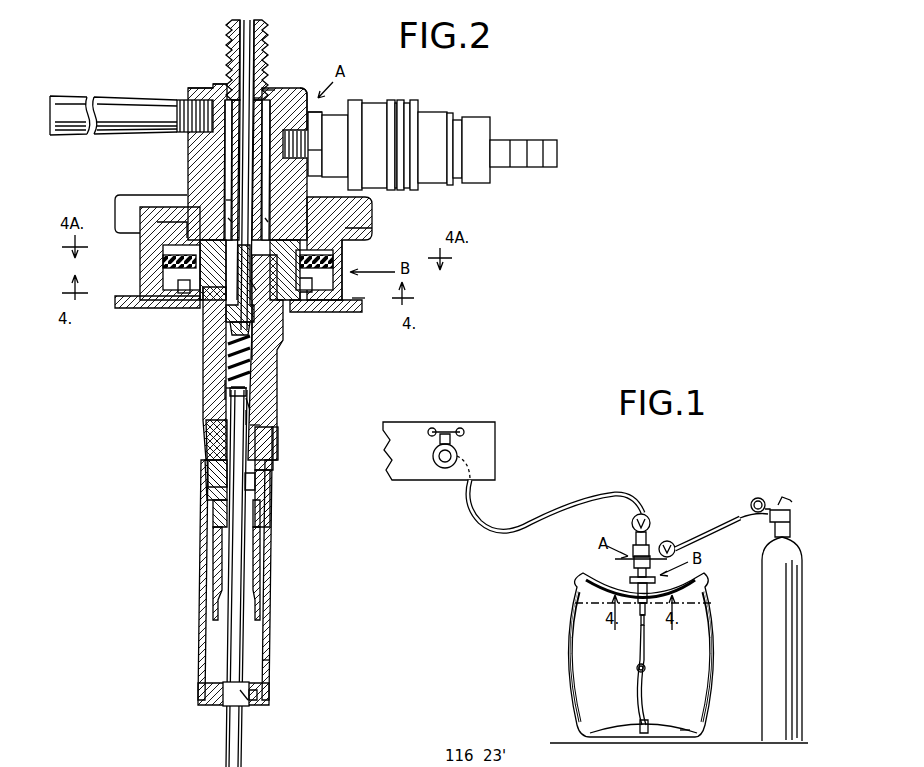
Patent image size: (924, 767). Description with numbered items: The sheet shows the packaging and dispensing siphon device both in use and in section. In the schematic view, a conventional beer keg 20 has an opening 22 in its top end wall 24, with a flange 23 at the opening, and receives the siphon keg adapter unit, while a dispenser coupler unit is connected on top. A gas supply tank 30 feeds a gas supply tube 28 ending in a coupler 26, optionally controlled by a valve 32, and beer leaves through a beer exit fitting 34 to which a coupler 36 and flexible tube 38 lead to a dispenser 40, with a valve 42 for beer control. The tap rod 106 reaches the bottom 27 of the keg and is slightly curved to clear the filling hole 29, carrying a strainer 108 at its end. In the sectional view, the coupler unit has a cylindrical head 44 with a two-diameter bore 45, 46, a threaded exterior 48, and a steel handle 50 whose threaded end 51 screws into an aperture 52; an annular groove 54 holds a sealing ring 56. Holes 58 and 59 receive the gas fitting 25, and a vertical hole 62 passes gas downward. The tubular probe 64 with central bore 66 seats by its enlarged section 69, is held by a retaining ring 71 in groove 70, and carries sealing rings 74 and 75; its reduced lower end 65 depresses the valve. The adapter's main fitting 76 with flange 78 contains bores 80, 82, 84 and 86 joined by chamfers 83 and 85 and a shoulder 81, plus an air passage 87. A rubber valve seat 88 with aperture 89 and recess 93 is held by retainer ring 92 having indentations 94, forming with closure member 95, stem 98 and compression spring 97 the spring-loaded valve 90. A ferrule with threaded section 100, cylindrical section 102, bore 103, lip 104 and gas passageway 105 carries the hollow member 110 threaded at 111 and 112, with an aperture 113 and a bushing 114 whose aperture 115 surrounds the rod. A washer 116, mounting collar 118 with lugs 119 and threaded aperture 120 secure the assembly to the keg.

In FIG. 1, the beer keg 20 is at (568, 683).
In FIG. 2, the opening 22 is at (287, 300).
In FIG. 1, the opening 22 is at (638, 592).
In FIG. 2, the flange 23 is at (178, 292).
In FIG. 2, the top end wall 24 is at (340, 312).
In FIG. 1, the top end wall 24 is at (628, 590).
In FIG. 2, the gas inlet port and fitting 25 is at (318, 118).
In FIG. 2, the coupler 26 is at (385, 112).
In FIG. 1, the coupler 26 is at (658, 548).
In FIG. 1, the bottom 27 is at (680, 738).
In FIG. 1, the gas supply tube 28 is at (718, 532).
In FIG. 1, the hole 29 is at (652, 670).
In FIG. 1, the gas supply tank 30 is at (760, 610).
In FIG. 1, the valve 32 is at (676, 540).
In FIG. 2, the beer exit fitting 34 is at (232, 45).
In FIG. 1, the coupler 36 is at (652, 548).
In FIG. 1, the flexible tube 38 is at (552, 520).
In FIG. 1, the dispenser 40 is at (420, 468).
In FIG. 1, the valve 42 is at (642, 514).
In FIG. 2, the head portion 44 is at (185, 162).
In FIG. 2, the bore 45 is at (228, 138).
In FIG. 2, the bore 46 is at (226, 198).
In FIG. 2, the threaded portion 48 is at (360, 212).
In FIG. 2, the steel handle 50 is at (116, 138).
In FIG. 2, the threaded end 51 is at (180, 108).
In FIG. 2, the threaded aperture 52 is at (197, 92).
In FIG. 2, the annular groove 54 is at (195, 300).
In FIG. 2, the sealing ring 56 is at (338, 248).
In FIG. 2, the hole 58 is at (295, 92).
In FIG. 2, the hole 59 is at (285, 158).
In FIG. 2, the hole 62 is at (300, 188).
In FIG. 2, the probe 64 is at (232, 160).
In FIG. 2, the lower end 65 is at (210, 300).
In FIG. 2, the central bore 66 is at (258, 40).
In FIG. 2, the enlarged section 69 is at (218, 86).
In FIG. 2, the annular groove 70 is at (258, 82).
In FIG. 2, the retaining ring 71 is at (268, 90).
In FIG. 2, the sealing ring 74 is at (228, 190).
In FIG. 2, the sealing ring 75 is at (310, 305).
In FIG. 2, the main fitting 76 is at (198, 406).
In FIG. 1, the main fitting 76 is at (648, 600).
In FIG. 2, the flange 78 is at (333, 258).
In FIG. 2, the bore 80 is at (330, 285).
In FIG. 2, the shoulder 81 is at (226, 312).
In FIG. 2, the bore 82 is at (260, 380).
In FIG. 2, the chamfered portion 83 is at (262, 395).
In FIG. 2, the bore 84 is at (262, 405).
In FIG. 2, the chamfered portion 85 is at (206, 435).
In FIG. 2, the bore 86 is at (279, 445).
In FIG. 2, the air passage 87 is at (262, 418).
In FIG. 2, the valve seat 88 is at (258, 330).
In FIG. 2, the central aperture 89 is at (258, 350).
In FIG. 2, the valve sub-assembly 90 is at (225, 380).
In FIG. 2, the valve retainer ring 92 is at (250, 270).
In FIG. 2, the peripheral shoulder recess 93 is at (262, 310).
In FIG. 2, the indentations 94 is at (268, 222).
In FIG. 2, the closure member 95 is at (228, 352).
In FIG. 2, the compression spring 97 is at (226, 392).
In FIG. 2, the stem portion 98 is at (232, 330).
In FIG. 2, the threaded section 100 is at (274, 467).
In FIG. 2, the cylindrical section 102 is at (262, 495).
In FIG. 2, the inside bore 103 is at (258, 482).
In FIG. 2, the annular lip 104 is at (262, 520).
In FIG. 2, the gas passageway 105 is at (225, 500).
In FIG. 2, the tap rod 106 is at (245, 757).
In FIG. 1, the tap rod 106 is at (636, 690).
In FIG. 2, the rubber valve 108 is at (262, 562).
In FIG. 1, the rubber valve 108 is at (650, 726).
In FIG. 2, the hollow member 110 is at (268, 630).
In FIG. 2, the internal threads 111 is at (205, 478).
In FIG. 2, the lower end 112 is at (262, 698).
In FIG. 2, the aperture 113 is at (270, 660).
In FIG. 1, the aperture 113 is at (648, 615).
In FIG. 2, the annular bushing 114 is at (208, 705).
In FIG. 2, the central aperture 115 is at (248, 705).
In FIG. 2, the annular washer 116 is at (140, 308).
In FIG. 2, the mounting collar 118 is at (134, 264).
In FIG. 2, the external lugs 119 is at (372, 229).
In FIG. 2, the threaded aperture 120 is at (171, 230).